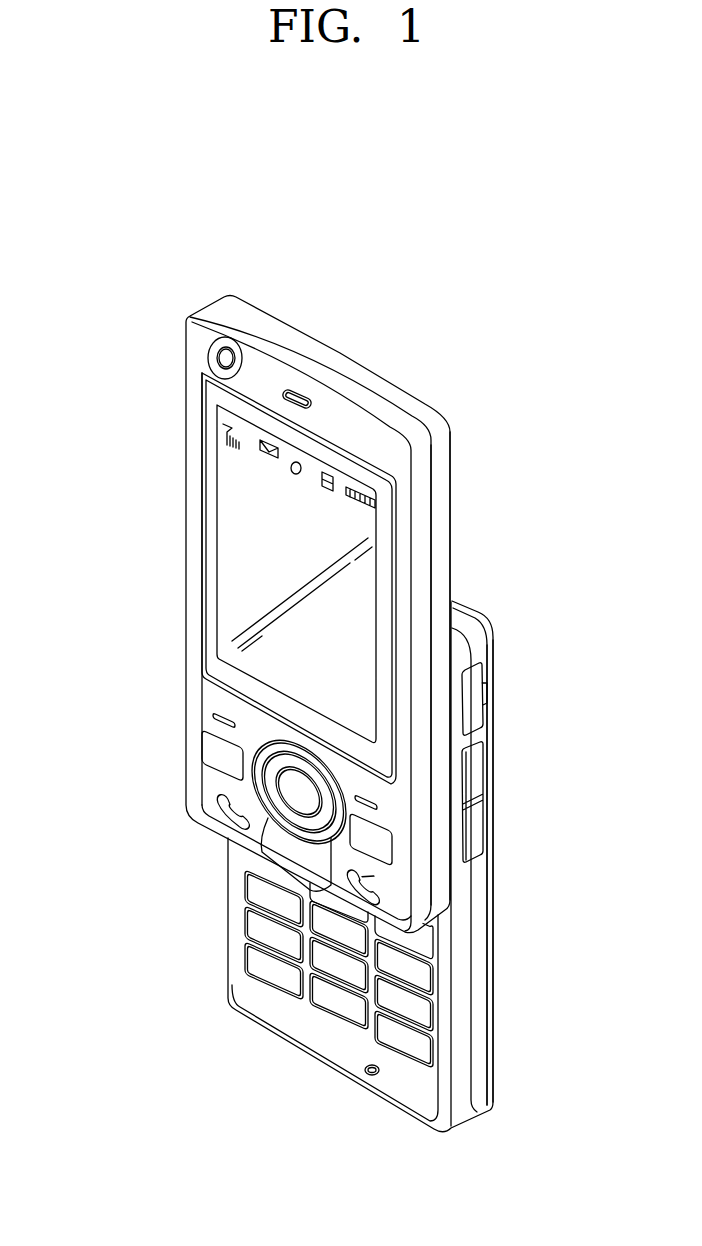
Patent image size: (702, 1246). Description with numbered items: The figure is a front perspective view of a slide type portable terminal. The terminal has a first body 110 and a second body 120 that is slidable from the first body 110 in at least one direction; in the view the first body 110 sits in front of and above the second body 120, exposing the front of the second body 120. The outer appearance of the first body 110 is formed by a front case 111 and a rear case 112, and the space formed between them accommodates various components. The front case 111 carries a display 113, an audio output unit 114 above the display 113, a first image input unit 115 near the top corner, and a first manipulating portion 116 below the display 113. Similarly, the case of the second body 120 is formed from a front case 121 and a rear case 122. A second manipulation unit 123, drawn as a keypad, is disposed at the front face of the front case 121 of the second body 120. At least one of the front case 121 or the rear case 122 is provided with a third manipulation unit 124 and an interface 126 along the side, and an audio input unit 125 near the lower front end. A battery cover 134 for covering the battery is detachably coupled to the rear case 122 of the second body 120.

The first body 110 is at (150, 433).
The front case 111 is at (430, 513).
The rear case 112 is at (440, 483).
The display 113 is at (230, 523).
The audio output unit 114 is at (296, 393).
The first image input unit 115 is at (225, 358).
The first manipulating portion 116 is at (212, 750).
The second body 120 is at (208, 901).
The front case 121 is at (460, 640).
The rear case 122 is at (484, 660).
The second manipulation unit 123 is at (255, 958).
The third manipulation unit 124 is at (475, 832).
The audio input unit 125 is at (372, 1078).
The interface 126 is at (472, 695).
The battery cover 134 is at (488, 968).